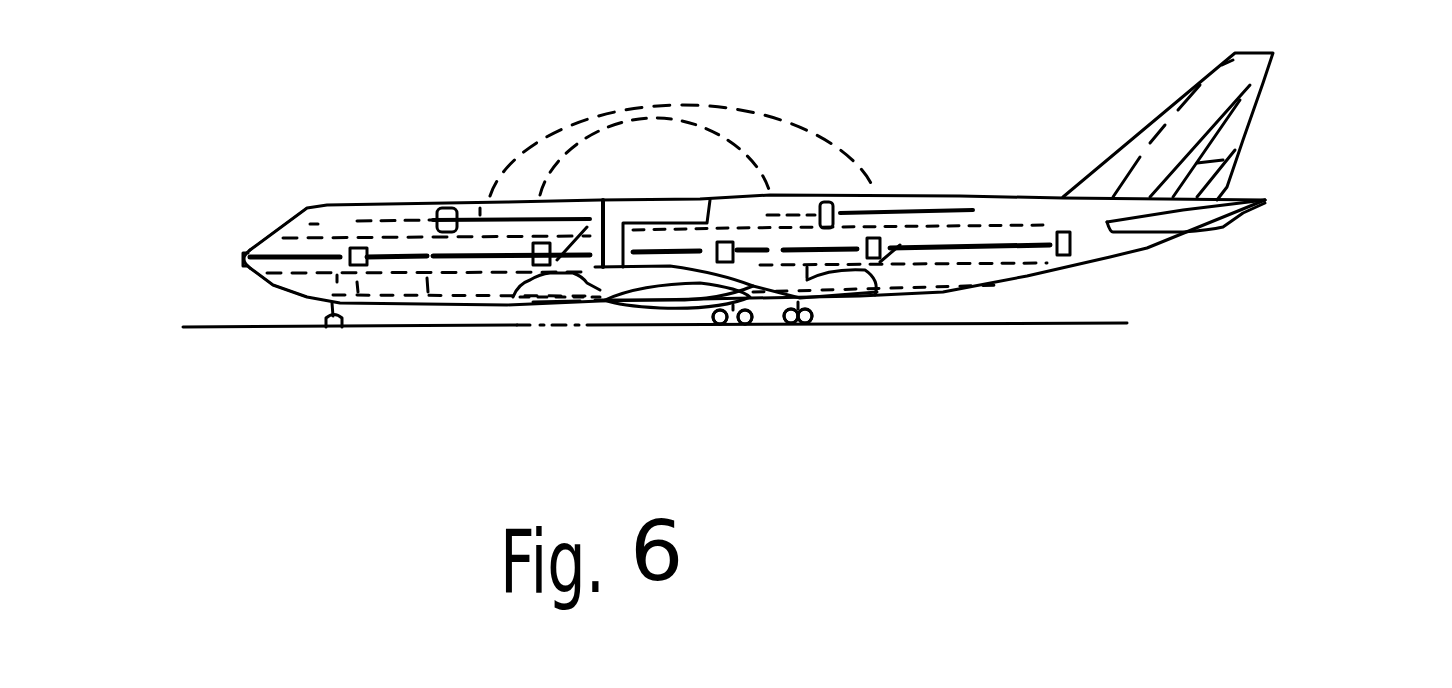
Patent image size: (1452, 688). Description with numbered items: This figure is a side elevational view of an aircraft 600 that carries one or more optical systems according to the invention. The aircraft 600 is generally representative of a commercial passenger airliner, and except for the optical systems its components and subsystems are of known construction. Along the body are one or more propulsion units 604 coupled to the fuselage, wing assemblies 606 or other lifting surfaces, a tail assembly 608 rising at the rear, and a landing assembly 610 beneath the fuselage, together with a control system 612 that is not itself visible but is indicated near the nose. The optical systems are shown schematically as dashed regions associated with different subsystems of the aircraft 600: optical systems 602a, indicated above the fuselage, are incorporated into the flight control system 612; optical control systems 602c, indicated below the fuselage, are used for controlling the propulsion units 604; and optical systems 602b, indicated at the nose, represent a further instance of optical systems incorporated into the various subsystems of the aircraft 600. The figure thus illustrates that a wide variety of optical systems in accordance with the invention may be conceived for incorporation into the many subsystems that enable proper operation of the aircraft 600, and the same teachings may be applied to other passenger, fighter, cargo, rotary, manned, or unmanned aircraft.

The aircraft 600 is at (352, 138).
The optical systems 602a is at (682, 142).
The forward sensor coverage region 602b is at (226, 230).
The optical control systems 602c is at (493, 325).
The propulsion units 604 is at (517, 310).
The wing assemblies 606 is at (653, 302).
The tail assembly 608 is at (1302, 100).
The landing assembly 610 is at (804, 361).
The control system 612 is at (250, 205).